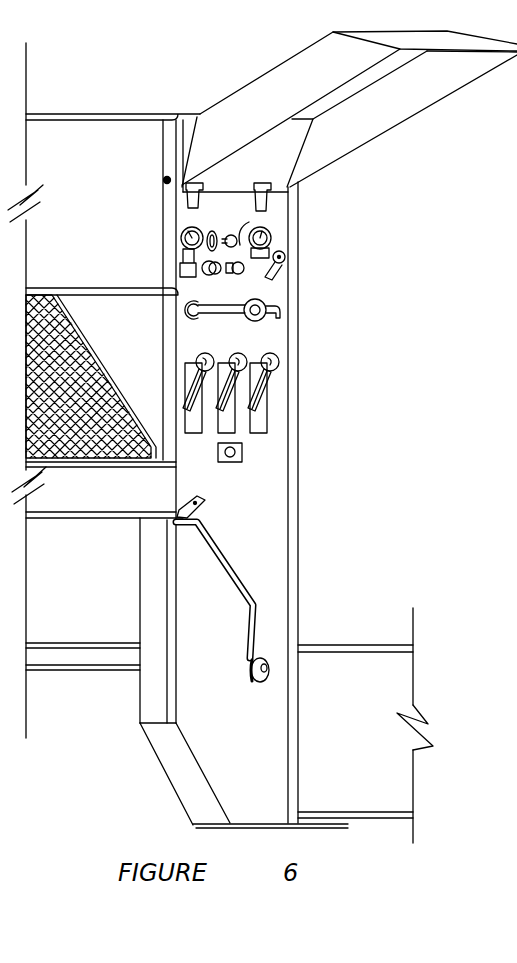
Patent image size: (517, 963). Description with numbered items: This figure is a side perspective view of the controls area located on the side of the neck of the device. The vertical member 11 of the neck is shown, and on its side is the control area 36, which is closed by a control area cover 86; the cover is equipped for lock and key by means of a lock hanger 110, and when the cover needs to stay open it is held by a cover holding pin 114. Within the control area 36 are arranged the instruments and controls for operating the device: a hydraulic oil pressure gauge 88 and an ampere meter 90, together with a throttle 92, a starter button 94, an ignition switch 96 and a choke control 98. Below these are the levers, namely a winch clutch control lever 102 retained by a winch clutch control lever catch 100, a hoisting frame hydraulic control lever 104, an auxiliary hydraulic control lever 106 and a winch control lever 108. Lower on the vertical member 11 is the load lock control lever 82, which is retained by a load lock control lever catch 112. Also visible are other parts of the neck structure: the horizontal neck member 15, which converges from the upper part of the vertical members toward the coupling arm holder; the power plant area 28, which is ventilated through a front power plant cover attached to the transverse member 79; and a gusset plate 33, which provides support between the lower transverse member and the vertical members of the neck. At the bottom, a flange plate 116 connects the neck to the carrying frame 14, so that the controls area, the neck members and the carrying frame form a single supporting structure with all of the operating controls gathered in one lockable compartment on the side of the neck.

The vertical member 11 is at (262, 463).
The carrying frame 14 is at (385, 737).
The horizontal neck member 15 is at (133, 163).
The power plant area 28 is at (91, 376).
The gusset plate 33 is at (115, 588).
The controls area 36 is at (276, 314).
The transverse member 79 is at (143, 488).
The load lock control lever 82 is at (238, 578).
The control area cover 86 is at (428, 80).
The hydraulic oil pressure gauge 88 is at (183, 236).
The ampere meter 90 is at (272, 240).
The throttle 92 is at (218, 233).
The starter button 94 is at (248, 286).
The ignition switch 96 is at (205, 275).
The choke control 98 is at (249, 222).
The winch clutch control lever catch 100 is at (293, 270).
The winch clutch control lever 102 is at (180, 325).
The hoisting frame hydraulic control lever 104 is at (250, 355).
The auxiliary hydraulic control lever 106 is at (200, 357).
The winch control lever 108 is at (280, 365).
The lock hanger 110 is at (243, 452).
The load lock control lever catch 112 is at (205, 496).
The cover holding pin 114 is at (164, 181).
The flange plate 116 is at (147, 705).